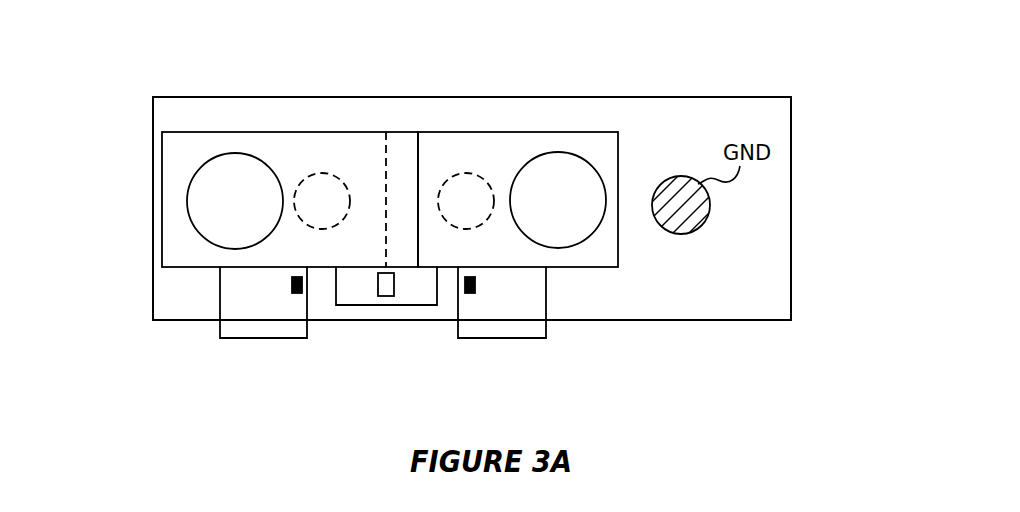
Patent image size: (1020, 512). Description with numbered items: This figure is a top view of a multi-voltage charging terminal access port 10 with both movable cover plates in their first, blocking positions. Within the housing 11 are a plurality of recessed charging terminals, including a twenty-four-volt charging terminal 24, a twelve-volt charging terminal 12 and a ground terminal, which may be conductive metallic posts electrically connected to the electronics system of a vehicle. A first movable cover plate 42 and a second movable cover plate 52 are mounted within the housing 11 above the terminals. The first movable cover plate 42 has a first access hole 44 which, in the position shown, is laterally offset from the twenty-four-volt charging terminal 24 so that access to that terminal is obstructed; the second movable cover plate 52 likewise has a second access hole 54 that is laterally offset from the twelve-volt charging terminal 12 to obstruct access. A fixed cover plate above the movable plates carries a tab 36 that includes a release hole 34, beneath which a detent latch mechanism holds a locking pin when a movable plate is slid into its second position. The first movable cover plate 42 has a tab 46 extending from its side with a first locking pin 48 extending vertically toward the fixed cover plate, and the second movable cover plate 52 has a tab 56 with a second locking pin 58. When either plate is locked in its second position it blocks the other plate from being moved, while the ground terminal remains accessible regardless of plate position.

The charging terminal access port 10 is at (146, 201).
The housing 11 is at (791, 243).
The 12-volt charging terminal 12 is at (463, 178).
The 24-volt charging terminal 24 is at (322, 182).
The release hole 34 is at (388, 275).
The tab 36 is at (357, 285).
The first movable cover plate 42 is at (191, 150).
The first access hole 44 is at (235, 167).
The tab 46 is at (244, 295).
The first locking pin 48 is at (297, 293).
The second movable cover plate 52 is at (602, 157).
The second access hole 54 is at (560, 170).
The tab 56 is at (528, 285).
The second locking pin 58 is at (471, 293).